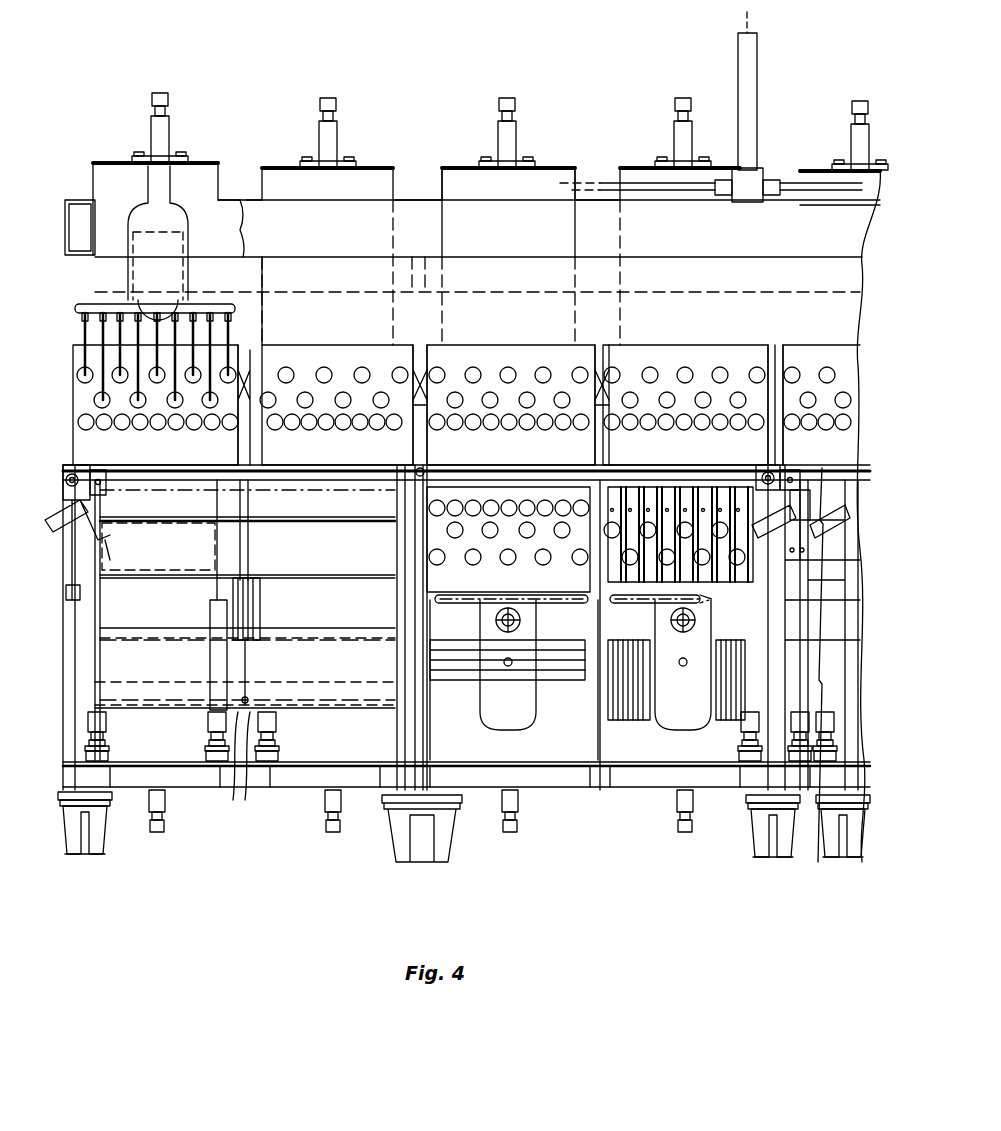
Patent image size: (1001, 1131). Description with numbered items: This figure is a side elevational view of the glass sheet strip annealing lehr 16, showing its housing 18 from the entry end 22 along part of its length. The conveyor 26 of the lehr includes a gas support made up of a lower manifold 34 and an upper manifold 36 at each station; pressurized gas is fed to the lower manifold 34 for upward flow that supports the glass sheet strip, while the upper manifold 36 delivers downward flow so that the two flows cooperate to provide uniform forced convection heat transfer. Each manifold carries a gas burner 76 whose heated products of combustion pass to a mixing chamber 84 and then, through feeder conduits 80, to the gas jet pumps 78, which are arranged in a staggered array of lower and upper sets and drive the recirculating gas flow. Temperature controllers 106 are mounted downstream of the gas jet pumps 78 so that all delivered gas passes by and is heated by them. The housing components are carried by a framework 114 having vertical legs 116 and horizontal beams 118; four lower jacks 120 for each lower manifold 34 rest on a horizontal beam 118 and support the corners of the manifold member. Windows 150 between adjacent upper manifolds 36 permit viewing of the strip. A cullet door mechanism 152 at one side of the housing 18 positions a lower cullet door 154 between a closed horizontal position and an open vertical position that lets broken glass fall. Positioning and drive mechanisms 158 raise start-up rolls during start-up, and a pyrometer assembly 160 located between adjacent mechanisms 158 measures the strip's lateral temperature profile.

The glass sheet strip annealing lehr 16 is at (464, 70).
The housing 18 is at (66, 200).
The entry end 22 is at (72, 466).
The conveyor 26 is at (54, 492).
The lower manifold 34 is at (592, 512).
The upper manifold 36 is at (321, 347).
The gas burner 76 is at (170, 122).
The gas jet pump 78 is at (215, 368).
The feeder conduits 80 is at (110, 306).
The mixing chamber 84 is at (494, 722).
The temperature controller 106 is at (116, 430).
The framework 114 is at (392, 655).
The vertical legs 116 is at (393, 740).
The horizontal beams 118 is at (172, 682).
The lower jacks 120 is at (207, 716).
The windows 150 is at (420, 376).
The cullet door mechanism 152 is at (262, 636).
The lower cullet door 154 is at (240, 802).
The positioning and drive mechanisms 158 is at (92, 530).
The pyrometer assembly 160 is at (424, 469).